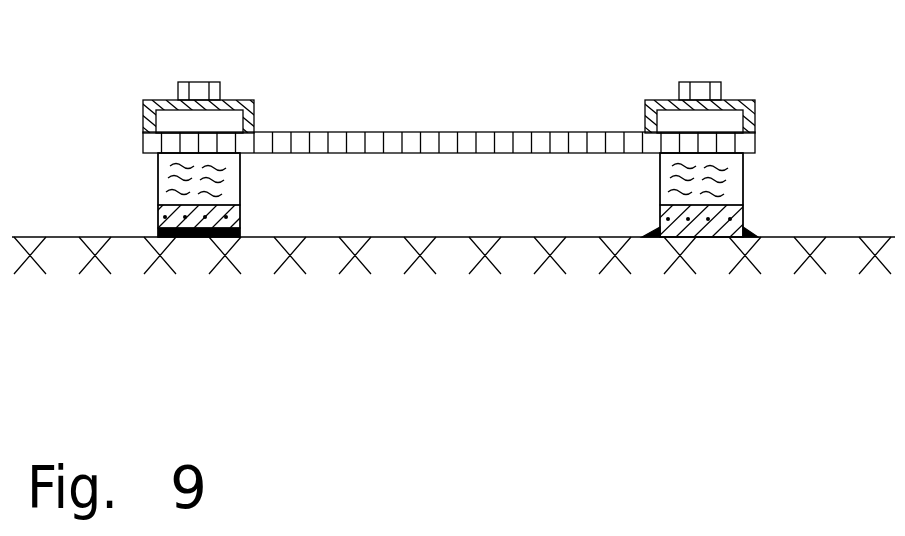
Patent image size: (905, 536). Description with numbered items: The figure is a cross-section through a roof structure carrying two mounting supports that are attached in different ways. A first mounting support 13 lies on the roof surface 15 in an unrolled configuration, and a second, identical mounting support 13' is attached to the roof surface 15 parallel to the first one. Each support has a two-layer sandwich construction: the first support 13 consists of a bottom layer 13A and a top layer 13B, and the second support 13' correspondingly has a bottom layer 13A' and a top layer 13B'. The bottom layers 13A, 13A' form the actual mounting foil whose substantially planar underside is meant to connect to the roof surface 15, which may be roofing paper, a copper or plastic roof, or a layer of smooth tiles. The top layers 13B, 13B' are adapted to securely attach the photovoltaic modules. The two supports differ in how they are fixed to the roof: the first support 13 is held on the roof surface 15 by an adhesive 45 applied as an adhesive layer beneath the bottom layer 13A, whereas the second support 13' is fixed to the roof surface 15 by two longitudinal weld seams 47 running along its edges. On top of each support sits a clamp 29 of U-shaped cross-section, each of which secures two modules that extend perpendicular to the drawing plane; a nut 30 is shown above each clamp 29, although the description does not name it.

The first mounting support 13 is at (240, 195).
The second mounting support 13' is at (646, 195).
The bottom layer 13A is at (141, 194).
The bottom layer of second mounting support 13A' is at (768, 193).
The top layer 13B is at (127, 161).
The top layer of second mounting support 13B' is at (772, 154).
The roof surface 15 is at (272, 250).
The clamp 29 is at (252, 107).
The nut 30 is at (198, 90).
The adhesive 45 is at (157, 229).
The longitudinal weld seams 47 is at (753, 232).